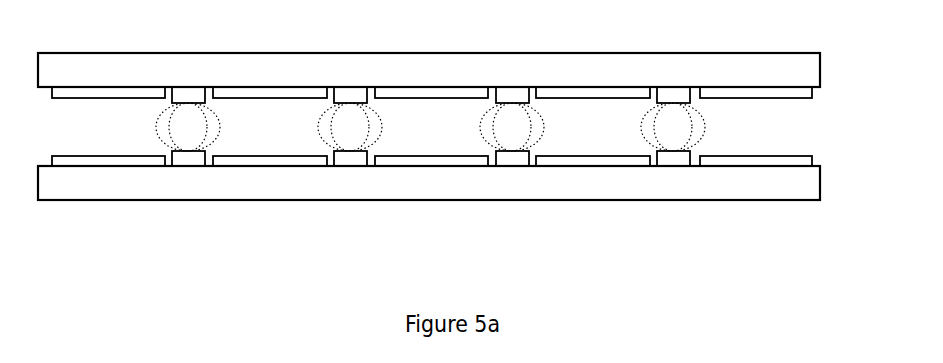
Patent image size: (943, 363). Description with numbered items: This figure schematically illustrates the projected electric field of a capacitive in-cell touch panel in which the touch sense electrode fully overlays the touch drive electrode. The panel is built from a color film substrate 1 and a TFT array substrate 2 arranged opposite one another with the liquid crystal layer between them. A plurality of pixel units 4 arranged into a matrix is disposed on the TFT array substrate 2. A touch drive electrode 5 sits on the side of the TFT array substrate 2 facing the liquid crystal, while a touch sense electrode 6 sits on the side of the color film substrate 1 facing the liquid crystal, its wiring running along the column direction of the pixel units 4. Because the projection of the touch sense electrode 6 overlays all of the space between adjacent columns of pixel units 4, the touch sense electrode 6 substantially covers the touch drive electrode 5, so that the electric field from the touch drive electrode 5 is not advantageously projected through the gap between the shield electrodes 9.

The color film substrate 1 is at (446, 52).
The TFT array substrate 2 is at (443, 207).
The pixel units 4 is at (432, 195).
The touch drive electrode 5 is at (431, 193).
The touch sense electrode 6 is at (431, 63).
The shield electrodes 9 is at (432, 60).